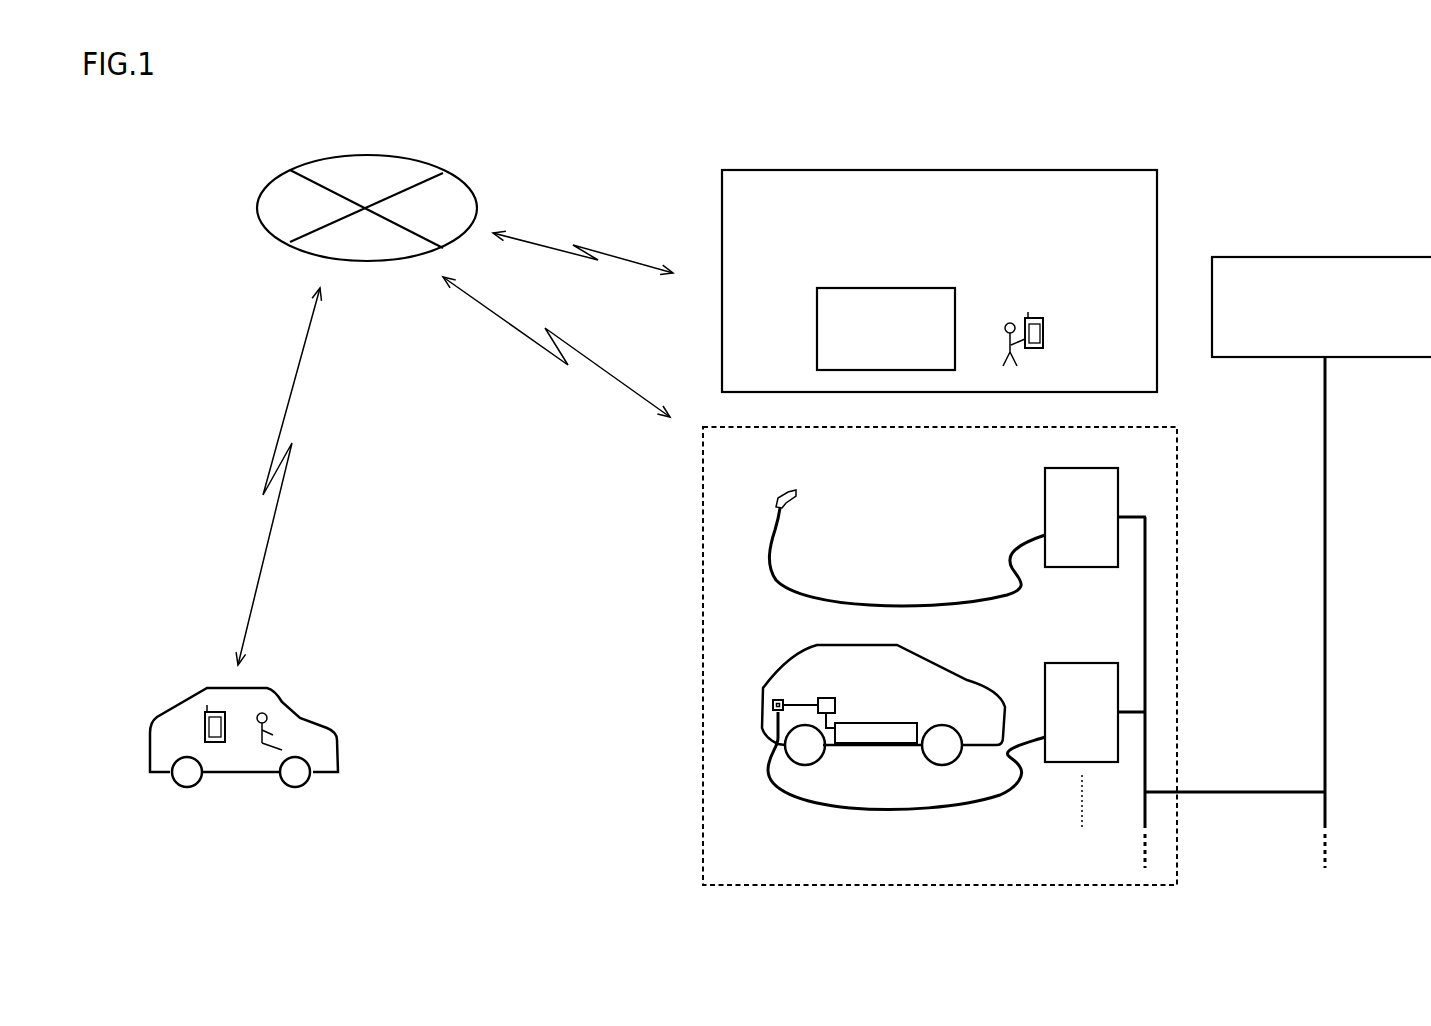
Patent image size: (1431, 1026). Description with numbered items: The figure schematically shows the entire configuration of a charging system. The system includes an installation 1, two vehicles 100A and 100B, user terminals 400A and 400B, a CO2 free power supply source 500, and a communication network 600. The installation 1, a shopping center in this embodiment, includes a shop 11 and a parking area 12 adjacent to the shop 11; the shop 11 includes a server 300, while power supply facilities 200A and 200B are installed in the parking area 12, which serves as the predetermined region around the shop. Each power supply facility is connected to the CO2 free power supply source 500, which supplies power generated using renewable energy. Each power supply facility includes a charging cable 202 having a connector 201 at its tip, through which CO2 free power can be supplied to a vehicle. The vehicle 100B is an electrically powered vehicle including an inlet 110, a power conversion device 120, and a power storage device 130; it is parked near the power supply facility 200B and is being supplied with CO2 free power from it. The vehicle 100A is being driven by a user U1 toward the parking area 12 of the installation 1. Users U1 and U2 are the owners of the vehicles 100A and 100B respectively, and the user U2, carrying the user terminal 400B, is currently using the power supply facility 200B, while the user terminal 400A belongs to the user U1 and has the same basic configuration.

The installation 1 is at (1177, 131).
The shop 11 is at (1108, 170).
The parking area 12 is at (1145, 427).
The communication network 600 is at (397, 155).
The server 300 is at (913, 288).
The user U2 is at (1010, 322).
The user terminal 400B is at (1043, 320).
The CO2 free power supply source 500 is at (1393, 257).
The power supply facility 200A is at (1070, 468).
The power supply facility 200B is at (1068, 663).
The connector 201 is at (768, 500).
The charging cable 202 is at (887, 603).
The vehicle 100B is at (922, 650).
The inlet 110 is at (776, 699).
The power conversion device 120 is at (826, 698).
The power storage device 130 is at (878, 723).
The vehicle 100A is at (188, 693).
The user terminal 400A is at (217, 712).
The user U1 is at (266, 714).